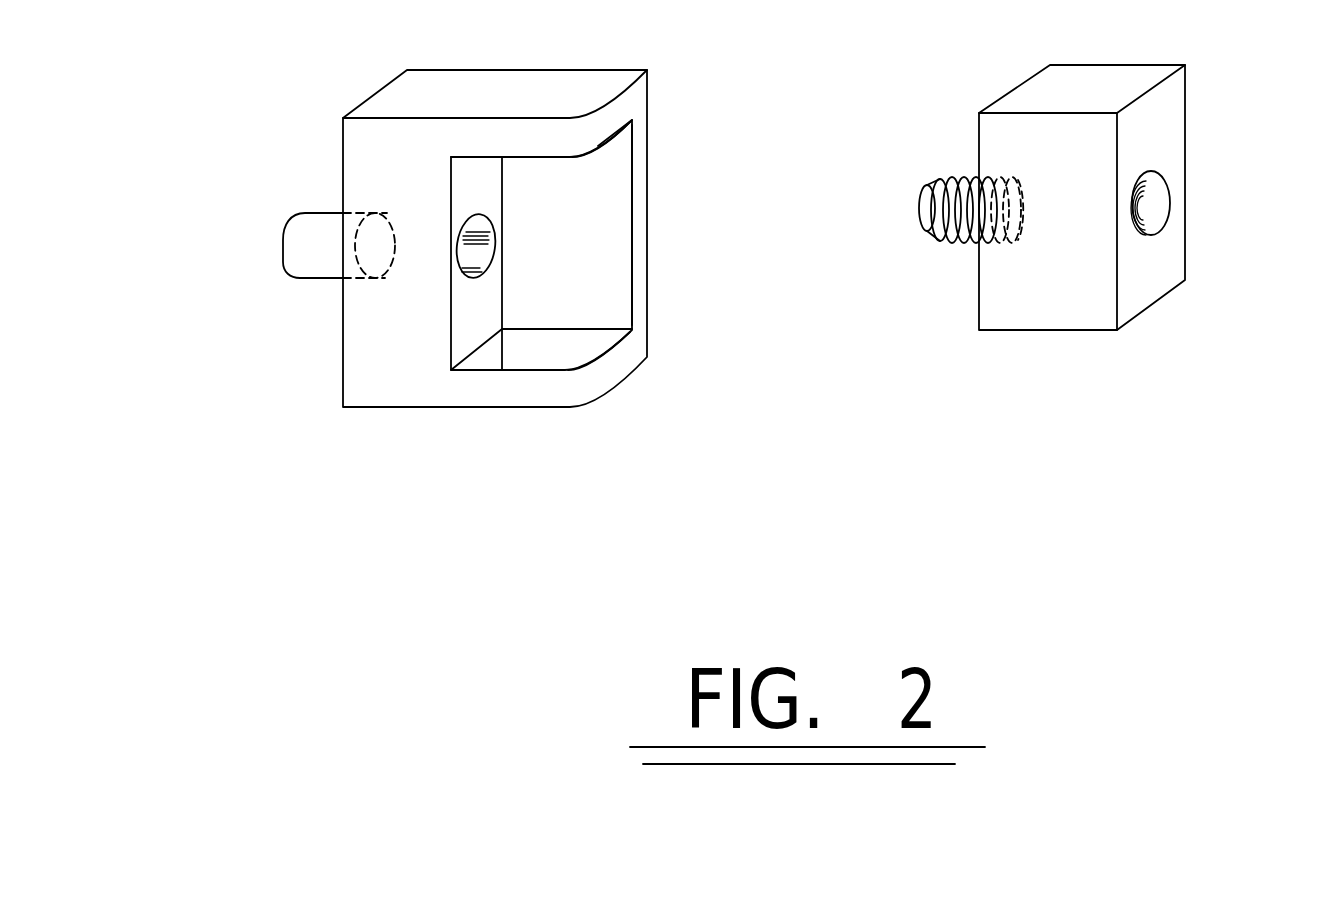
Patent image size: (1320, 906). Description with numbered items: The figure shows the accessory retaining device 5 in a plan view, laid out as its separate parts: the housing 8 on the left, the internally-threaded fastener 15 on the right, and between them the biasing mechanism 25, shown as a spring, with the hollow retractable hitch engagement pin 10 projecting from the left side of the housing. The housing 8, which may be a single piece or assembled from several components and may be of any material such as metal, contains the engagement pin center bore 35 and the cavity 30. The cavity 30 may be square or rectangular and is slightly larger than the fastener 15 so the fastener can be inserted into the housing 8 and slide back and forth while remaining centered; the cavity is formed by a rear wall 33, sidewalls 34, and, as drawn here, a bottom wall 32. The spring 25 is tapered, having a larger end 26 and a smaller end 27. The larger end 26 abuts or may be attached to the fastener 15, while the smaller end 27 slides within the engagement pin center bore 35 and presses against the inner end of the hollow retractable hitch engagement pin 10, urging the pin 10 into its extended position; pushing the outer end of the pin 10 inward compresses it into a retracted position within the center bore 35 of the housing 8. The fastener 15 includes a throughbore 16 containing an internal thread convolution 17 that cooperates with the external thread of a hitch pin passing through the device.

The accessory retaining device 5 is at (760, 525).
The housing 8 is at (545, 410).
The hollow retractable hitch engagement pin 10 is at (282, 247).
The internally-threaded fastener 15 is at (1025, 332).
The throughbore 16 is at (1170, 197).
The internal thread convolution 17 is at (1152, 222).
The biasing mechanism 25 is at (967, 247).
The larger end 26 is at (982, 183).
The smaller end 27 is at (920, 204).
The cavity 30 is at (603, 210).
The bottom wall 32 is at (582, 295).
The rear wall 33 is at (475, 298).
The sidewalls 34 is at (598, 145).
The engagement pin center bore 35 is at (480, 252).